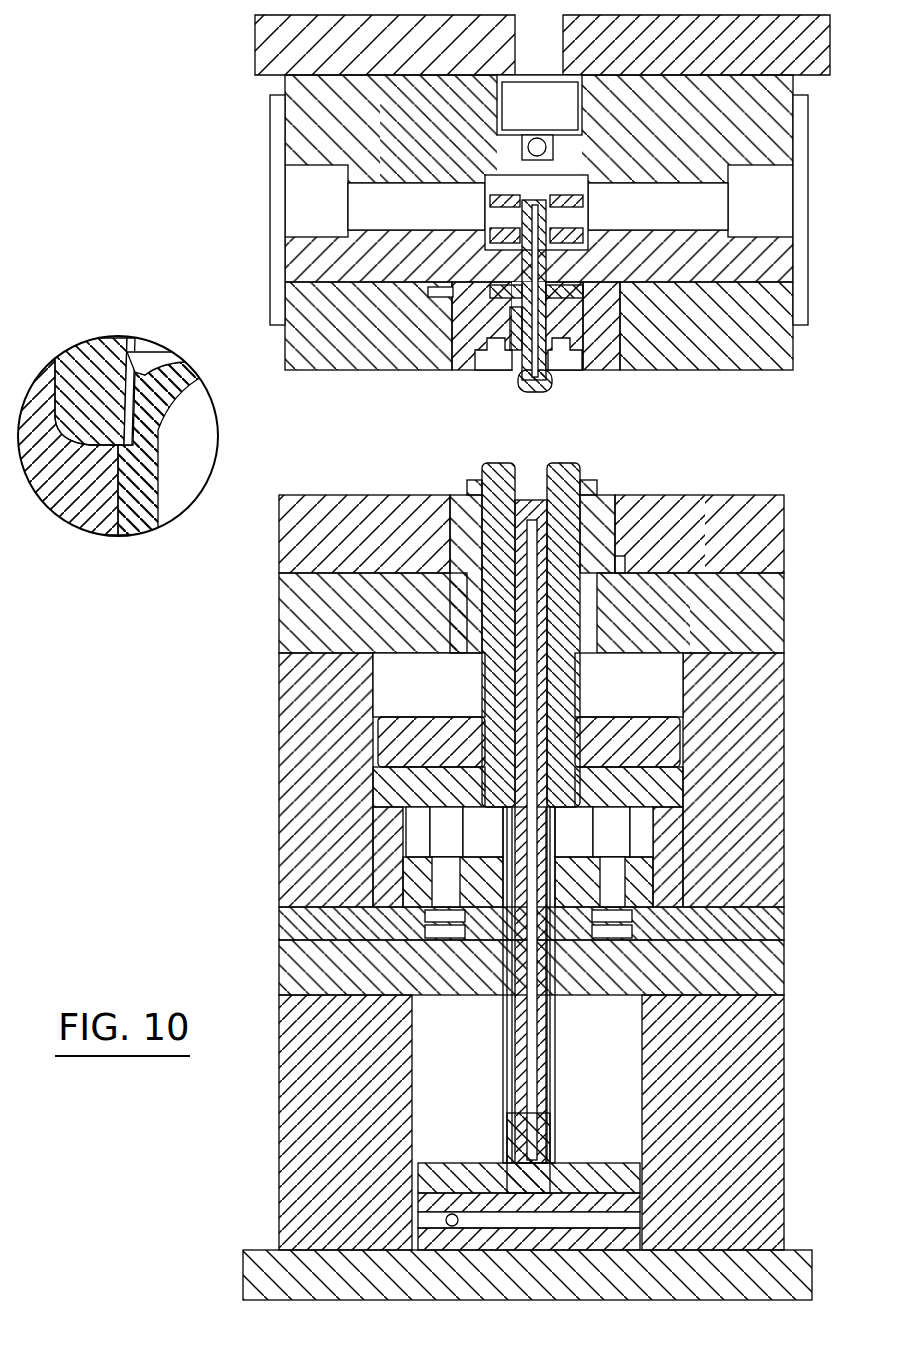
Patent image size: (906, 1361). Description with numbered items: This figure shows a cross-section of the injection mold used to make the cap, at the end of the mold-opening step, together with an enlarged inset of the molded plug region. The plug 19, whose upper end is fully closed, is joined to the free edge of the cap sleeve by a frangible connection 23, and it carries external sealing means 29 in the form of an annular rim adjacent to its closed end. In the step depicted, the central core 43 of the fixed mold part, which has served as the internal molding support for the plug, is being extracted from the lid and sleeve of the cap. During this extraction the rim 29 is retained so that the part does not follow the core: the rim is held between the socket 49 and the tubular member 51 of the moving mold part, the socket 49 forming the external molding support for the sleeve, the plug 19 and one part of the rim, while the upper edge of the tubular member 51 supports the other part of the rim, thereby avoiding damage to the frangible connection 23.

The plug 19 is at (110, 437).
The frangible connection 23 is at (120, 443).
The external sealing means 29 is at (528, 492).
The central core 43 is at (552, 392).
The socket 49 is at (565, 466).
The tubular member 51 is at (605, 492).